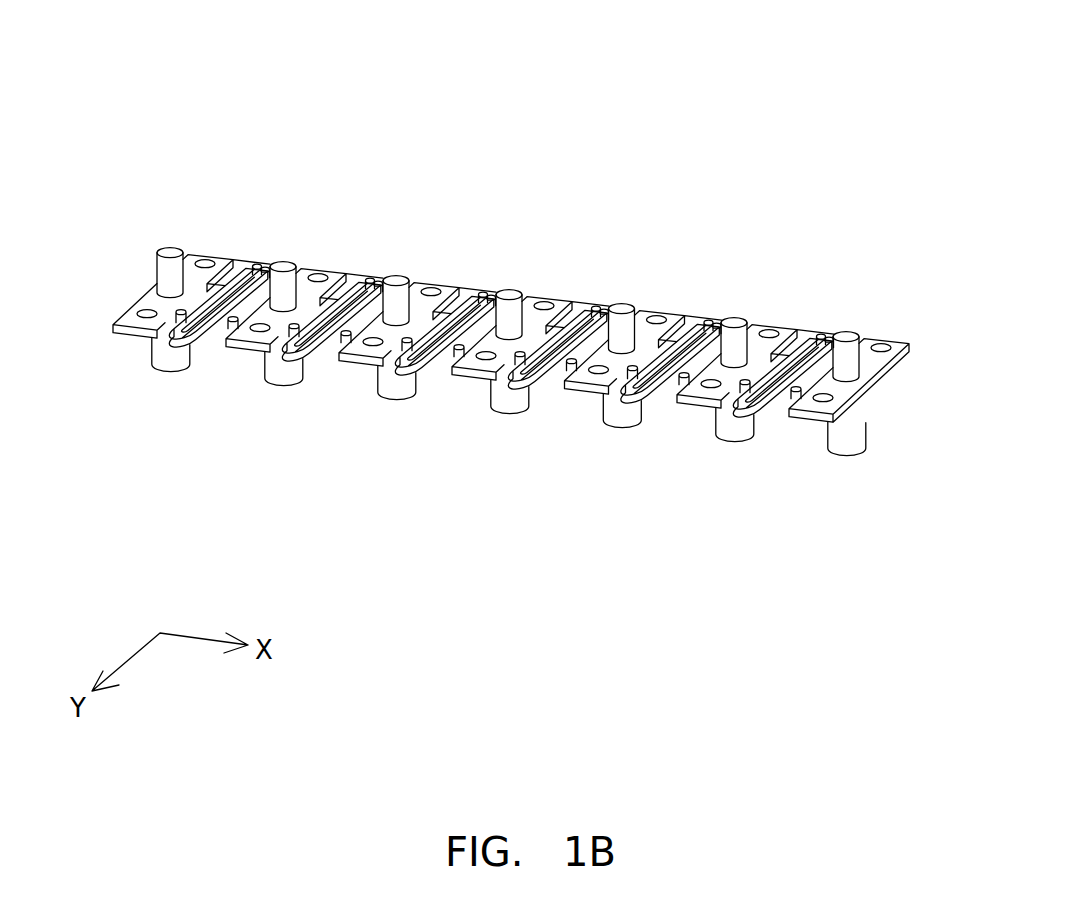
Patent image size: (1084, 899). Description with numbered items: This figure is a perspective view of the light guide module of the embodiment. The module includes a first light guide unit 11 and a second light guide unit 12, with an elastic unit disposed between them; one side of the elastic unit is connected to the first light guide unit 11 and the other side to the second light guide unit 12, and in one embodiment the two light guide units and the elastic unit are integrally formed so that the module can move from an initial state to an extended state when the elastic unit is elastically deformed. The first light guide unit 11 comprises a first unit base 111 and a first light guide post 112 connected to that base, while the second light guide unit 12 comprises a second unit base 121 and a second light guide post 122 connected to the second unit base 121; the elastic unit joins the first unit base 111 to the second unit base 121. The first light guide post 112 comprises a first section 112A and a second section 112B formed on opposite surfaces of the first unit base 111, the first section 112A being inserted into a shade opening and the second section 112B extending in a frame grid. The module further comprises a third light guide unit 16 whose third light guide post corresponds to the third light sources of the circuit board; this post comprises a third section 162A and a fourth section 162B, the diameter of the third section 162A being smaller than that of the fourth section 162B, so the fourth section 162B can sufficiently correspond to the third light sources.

The first light guide unit 11 is at (501, 238).
The first unit base 111 is at (150, 302).
The first light guide post 112 is at (506, 238).
The first section 112A is at (173, 249).
The second section 112B is at (168, 360).
The second light guide unit 12 is at (314, 315).
The second unit base 121 is at (333, 280).
The second light guide post 122 is at (284, 287).
The third light guide unit 16 is at (773, 375).
The third section 162A is at (736, 343).
The fourth section 162B is at (738, 433).